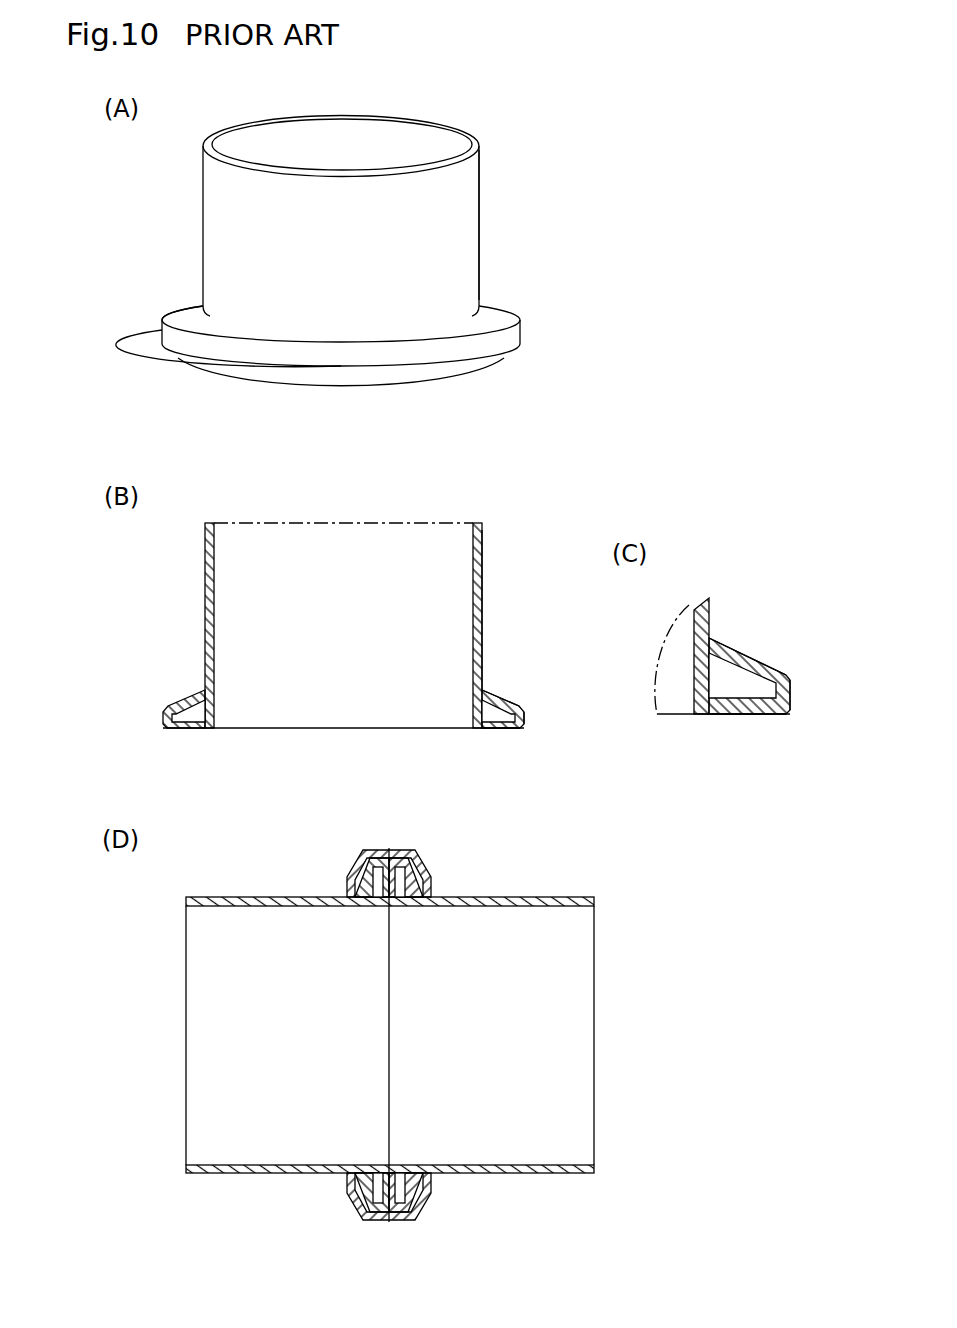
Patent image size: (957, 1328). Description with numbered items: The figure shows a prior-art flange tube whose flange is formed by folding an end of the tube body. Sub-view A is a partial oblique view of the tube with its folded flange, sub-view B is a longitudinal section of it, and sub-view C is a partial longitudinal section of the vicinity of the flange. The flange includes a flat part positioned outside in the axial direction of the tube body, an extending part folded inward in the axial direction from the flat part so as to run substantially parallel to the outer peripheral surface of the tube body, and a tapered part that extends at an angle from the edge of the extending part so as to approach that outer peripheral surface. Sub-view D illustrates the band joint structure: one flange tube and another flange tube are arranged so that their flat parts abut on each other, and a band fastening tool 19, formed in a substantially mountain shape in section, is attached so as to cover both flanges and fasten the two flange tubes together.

The band fastening tool 19 is at (391, 850).